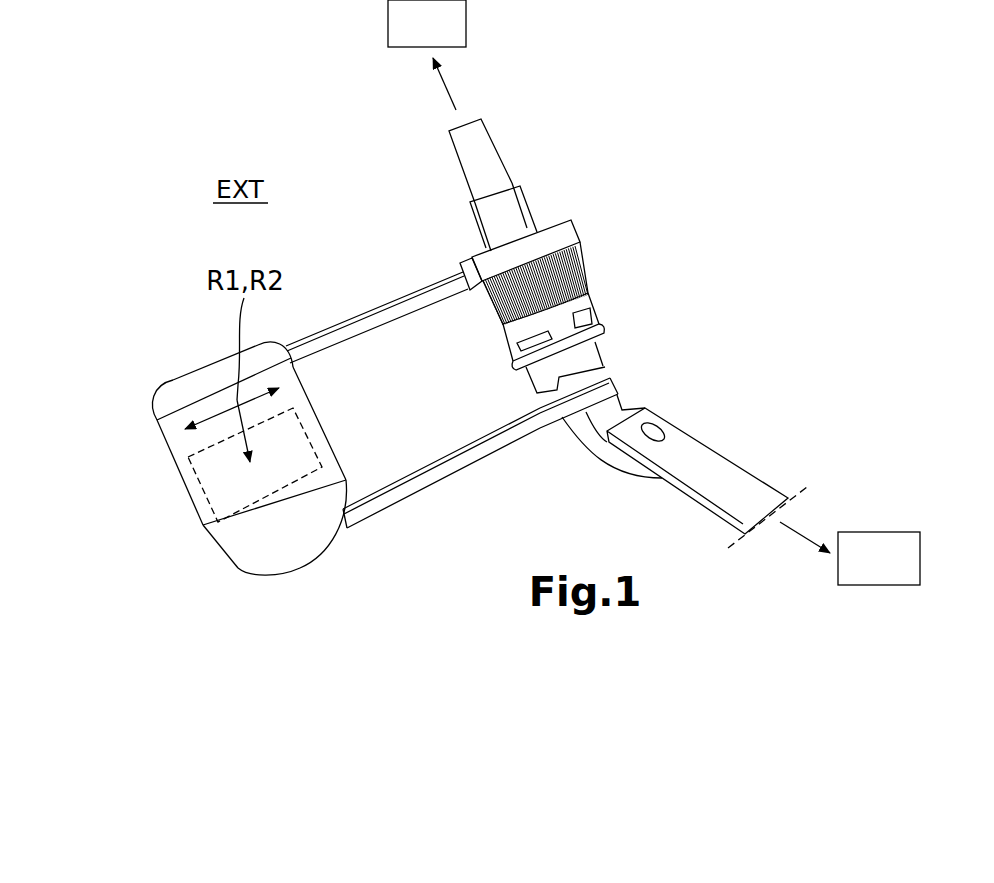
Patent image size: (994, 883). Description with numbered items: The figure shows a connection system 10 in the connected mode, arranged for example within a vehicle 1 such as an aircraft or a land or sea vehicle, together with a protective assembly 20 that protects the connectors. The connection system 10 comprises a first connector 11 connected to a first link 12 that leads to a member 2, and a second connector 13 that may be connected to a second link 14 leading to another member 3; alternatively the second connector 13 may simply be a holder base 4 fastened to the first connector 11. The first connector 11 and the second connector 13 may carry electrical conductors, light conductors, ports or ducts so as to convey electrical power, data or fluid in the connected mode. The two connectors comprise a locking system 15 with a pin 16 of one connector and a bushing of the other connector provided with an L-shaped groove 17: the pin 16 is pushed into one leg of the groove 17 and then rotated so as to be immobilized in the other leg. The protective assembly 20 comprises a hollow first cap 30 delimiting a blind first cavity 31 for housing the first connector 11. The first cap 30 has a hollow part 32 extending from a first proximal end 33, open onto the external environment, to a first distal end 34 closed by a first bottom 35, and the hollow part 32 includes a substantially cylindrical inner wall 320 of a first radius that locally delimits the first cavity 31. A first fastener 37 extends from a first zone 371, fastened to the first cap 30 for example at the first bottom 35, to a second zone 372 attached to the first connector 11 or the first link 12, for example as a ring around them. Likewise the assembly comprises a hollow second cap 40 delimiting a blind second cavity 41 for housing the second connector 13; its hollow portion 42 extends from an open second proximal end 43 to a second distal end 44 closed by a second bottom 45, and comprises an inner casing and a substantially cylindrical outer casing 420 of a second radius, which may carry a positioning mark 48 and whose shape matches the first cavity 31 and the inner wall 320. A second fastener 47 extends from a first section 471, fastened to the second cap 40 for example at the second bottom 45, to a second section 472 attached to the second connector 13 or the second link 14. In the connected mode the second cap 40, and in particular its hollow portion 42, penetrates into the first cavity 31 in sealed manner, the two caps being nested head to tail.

The vehicle 1 is at (80, 571).
The member 2 is at (418, 36).
The member 3 is at (871, 574).
The holder base 4 is at (627, 406).
The connection system 10 is at (698, 227).
The first connector 11 is at (578, 268).
The first link 12 is at (520, 204).
The second connector 13 is at (587, 352).
The second link 14 is at (725, 474).
The locking system 15 is at (503, 370).
The pin 16 is at (503, 363).
The L-shaped groove 17 is at (593, 315).
The protective assembly 20 is at (160, 593).
The first cap 30 is at (130, 427).
The first cavity 31 is at (293, 496).
The hollow part 32 is at (167, 463).
The first proximal end 33 is at (201, 524).
The first distal end 34 is at (157, 421).
The first bottom 35 is at (214, 372).
The first fastener 37 is at (442, 282).
The second cap 40 is at (326, 560).
The second cavity 41 is at (280, 398).
The hollow portion 42 is at (231, 556).
The second proximal end 43 is at (292, 422).
The second distal end 44 is at (226, 576).
The second bottom 45 is at (318, 553).
The second fastener 47 is at (446, 475).
The positioning mark 48 is at (298, 455).
The inner wall 320 is at (213, 527).
The first zone 371 is at (280, 342).
The second zone 372 is at (517, 253).
The outer casing 420 is at (290, 528).
The first section 471 is at (350, 535).
The second section 472 is at (612, 375).